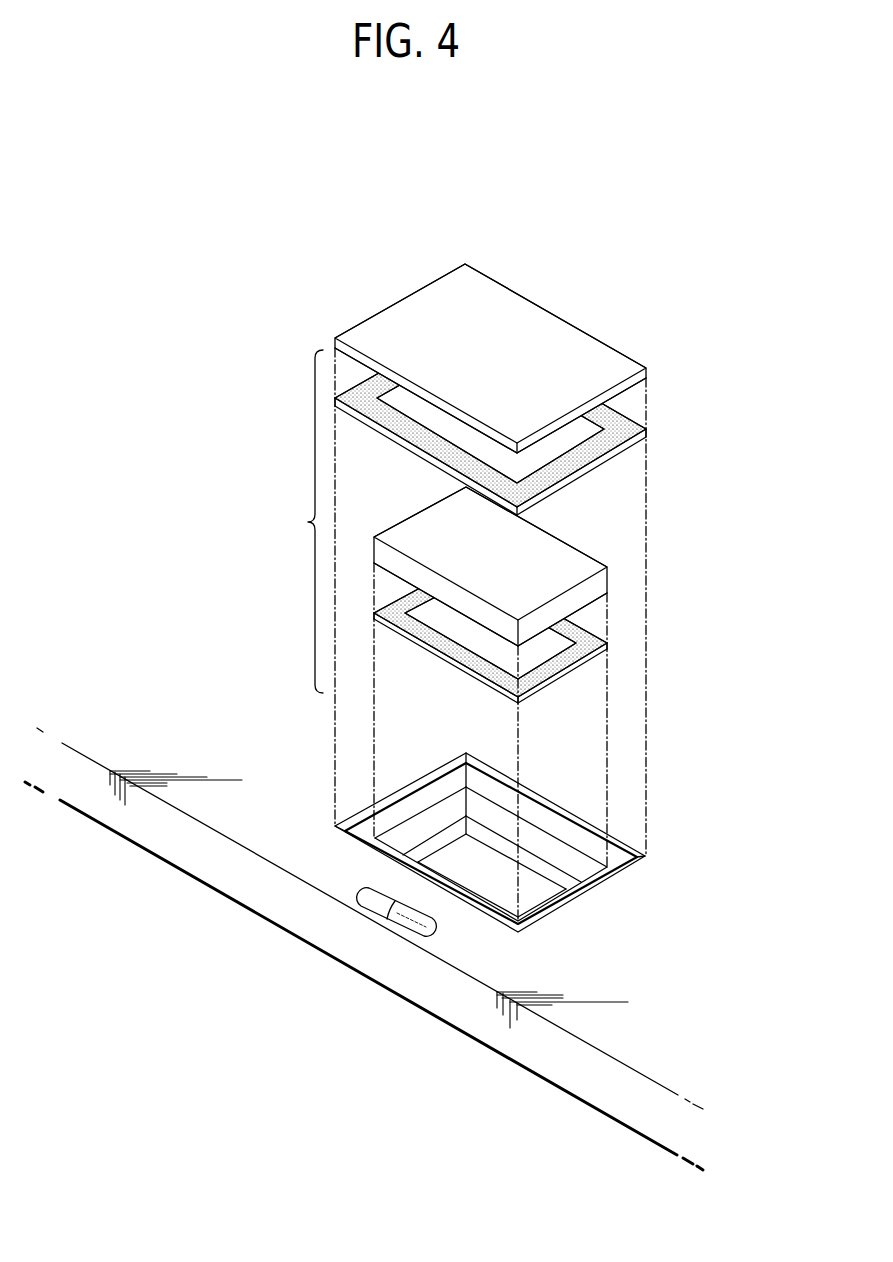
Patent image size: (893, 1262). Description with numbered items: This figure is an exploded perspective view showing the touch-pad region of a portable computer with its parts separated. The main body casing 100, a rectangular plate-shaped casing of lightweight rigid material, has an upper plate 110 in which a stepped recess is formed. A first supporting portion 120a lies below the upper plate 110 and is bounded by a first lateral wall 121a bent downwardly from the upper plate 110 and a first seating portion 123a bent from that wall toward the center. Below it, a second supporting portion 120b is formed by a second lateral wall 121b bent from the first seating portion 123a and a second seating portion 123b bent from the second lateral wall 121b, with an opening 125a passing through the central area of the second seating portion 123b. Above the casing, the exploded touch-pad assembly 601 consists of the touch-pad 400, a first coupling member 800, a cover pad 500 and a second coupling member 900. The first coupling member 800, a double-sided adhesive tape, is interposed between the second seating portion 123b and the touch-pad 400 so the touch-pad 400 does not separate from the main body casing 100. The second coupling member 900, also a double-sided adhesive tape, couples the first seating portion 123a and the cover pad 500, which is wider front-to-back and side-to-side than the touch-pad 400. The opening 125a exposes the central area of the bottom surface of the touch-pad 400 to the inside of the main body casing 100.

The main body casing 100 is at (625, 1112).
The upper plate 110 is at (253, 833).
The first supporting portion 120a is at (564, 842).
The first lateral wall 121a is at (563, 814).
The first seating portion 123a is at (567, 833).
The second supporting portion 120b is at (598, 857).
The second lateral wall 121b is at (567, 857).
The second seating portion 123b is at (563, 877).
The opening 125a is at (531, 896).
The touch-pad 400 is at (567, 558).
The cover pad 500 is at (600, 360).
The touch-pad assembly 601 is at (505, 483).
The first coupling member 800 is at (597, 638).
The second coupling member 900 is at (627, 415).